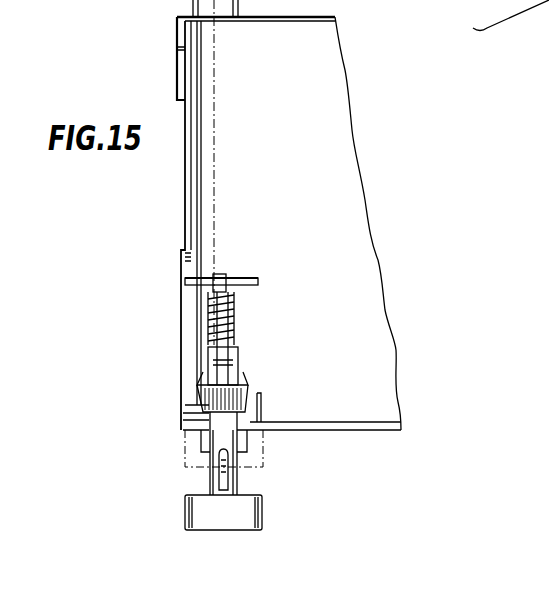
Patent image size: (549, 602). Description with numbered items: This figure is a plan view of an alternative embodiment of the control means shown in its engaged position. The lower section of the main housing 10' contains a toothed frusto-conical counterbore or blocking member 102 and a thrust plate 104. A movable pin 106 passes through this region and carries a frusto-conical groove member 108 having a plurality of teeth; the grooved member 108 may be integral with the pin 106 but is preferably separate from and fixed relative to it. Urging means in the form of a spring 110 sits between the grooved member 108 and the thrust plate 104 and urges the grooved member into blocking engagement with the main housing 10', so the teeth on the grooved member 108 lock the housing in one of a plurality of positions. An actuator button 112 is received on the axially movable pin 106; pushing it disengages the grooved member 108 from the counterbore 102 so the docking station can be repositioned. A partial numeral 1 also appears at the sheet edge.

The main housing 10' is at (289, 233).
The thrust plate 104 is at (247, 278).
The movable pin 106 is at (240, 295).
The spring 110 is at (237, 320).
The toothed frusto-conical counterbore 102 is at (245, 383).
The frusto-conical groove member 108 is at (197, 393).
The actuator button 112 is at (208, 522).
The wafer 1 is at (511, 268).